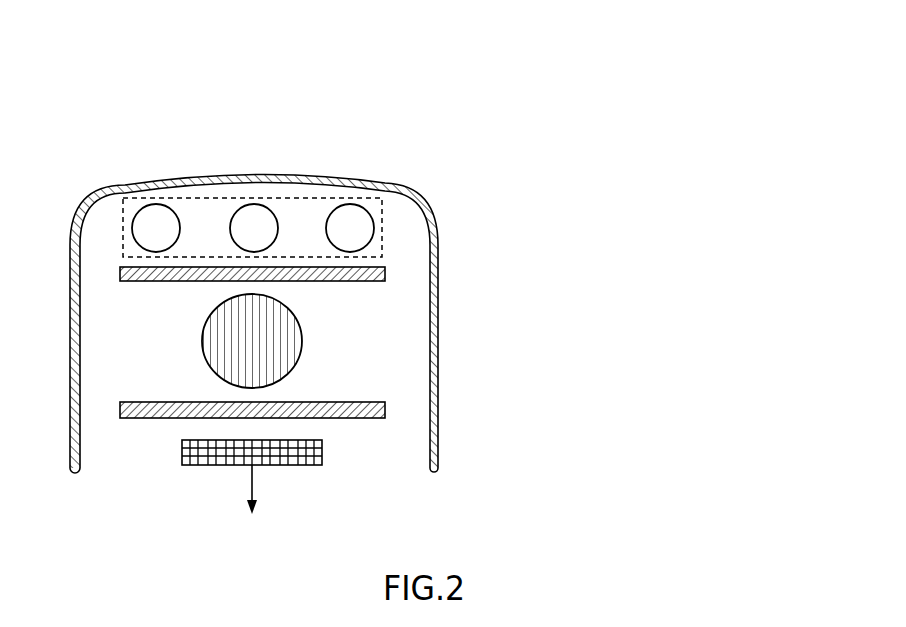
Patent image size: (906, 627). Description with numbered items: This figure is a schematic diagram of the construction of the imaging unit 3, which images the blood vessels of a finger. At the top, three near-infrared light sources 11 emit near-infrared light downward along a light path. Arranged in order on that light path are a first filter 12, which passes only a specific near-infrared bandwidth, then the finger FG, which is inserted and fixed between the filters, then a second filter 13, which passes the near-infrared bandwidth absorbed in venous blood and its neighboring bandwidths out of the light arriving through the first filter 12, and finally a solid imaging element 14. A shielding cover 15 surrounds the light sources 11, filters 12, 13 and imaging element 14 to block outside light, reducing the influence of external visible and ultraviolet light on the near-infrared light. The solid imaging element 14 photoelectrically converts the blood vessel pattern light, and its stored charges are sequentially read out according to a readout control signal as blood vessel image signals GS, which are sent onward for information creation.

The imaging unit 3 is at (77, 146).
The near-infrared light sources 11 is at (221, 197).
The first filter 12 is at (385, 273).
The second filter 13 is at (385, 405).
The solid imaging element 14 is at (322, 452).
The shielding cover 15 is at (417, 193).
The finger FG is at (302, 338).
The blood vessel image signals GS is at (256, 490).